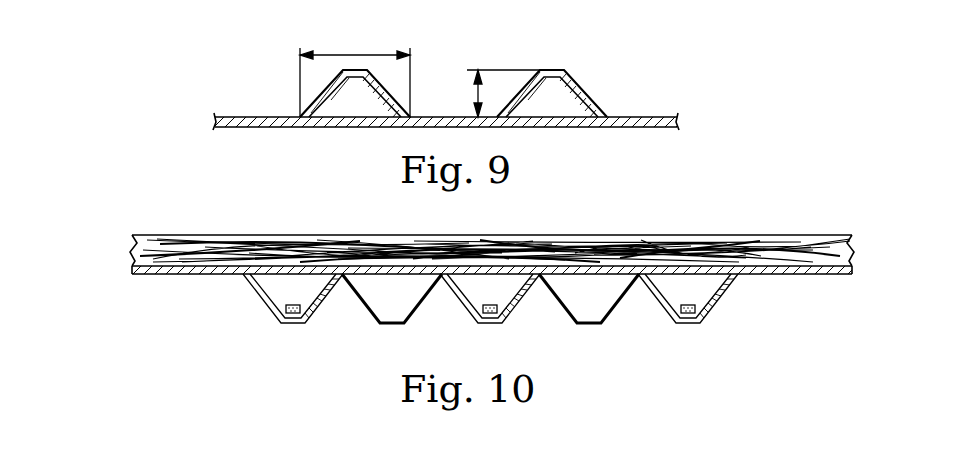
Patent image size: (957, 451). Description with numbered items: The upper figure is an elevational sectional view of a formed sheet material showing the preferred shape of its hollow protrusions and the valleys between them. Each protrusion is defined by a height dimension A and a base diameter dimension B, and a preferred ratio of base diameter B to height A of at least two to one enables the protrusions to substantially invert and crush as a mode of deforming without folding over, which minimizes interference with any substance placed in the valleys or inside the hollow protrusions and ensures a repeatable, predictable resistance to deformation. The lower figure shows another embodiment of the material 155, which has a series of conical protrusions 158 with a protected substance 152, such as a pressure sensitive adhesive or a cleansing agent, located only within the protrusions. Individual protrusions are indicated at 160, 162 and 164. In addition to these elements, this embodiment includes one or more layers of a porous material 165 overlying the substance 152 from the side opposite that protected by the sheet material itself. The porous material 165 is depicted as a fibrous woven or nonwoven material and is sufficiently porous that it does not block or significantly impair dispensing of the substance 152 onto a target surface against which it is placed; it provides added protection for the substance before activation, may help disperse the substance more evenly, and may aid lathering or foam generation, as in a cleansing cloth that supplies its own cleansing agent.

In FIG. 9, the height dimension A is at (476, 92).
In FIG. 9, the base diameter dimension B is at (356, 55).
In FIG. 10, the substance 152 is at (286, 304).
In FIG. 10, the material 155 is at (132, 272).
In FIG. 10, the conical protrusions 158 is at (370, 310).
In FIG. 10, the pocket wall 160 is at (271, 310).
In FIG. 10, the pocket with chip 162 is at (578, 276).
In FIG. 10, the pocket bottom 164 is at (690, 326).
In FIG. 10, the porous material 165 is at (565, 243).